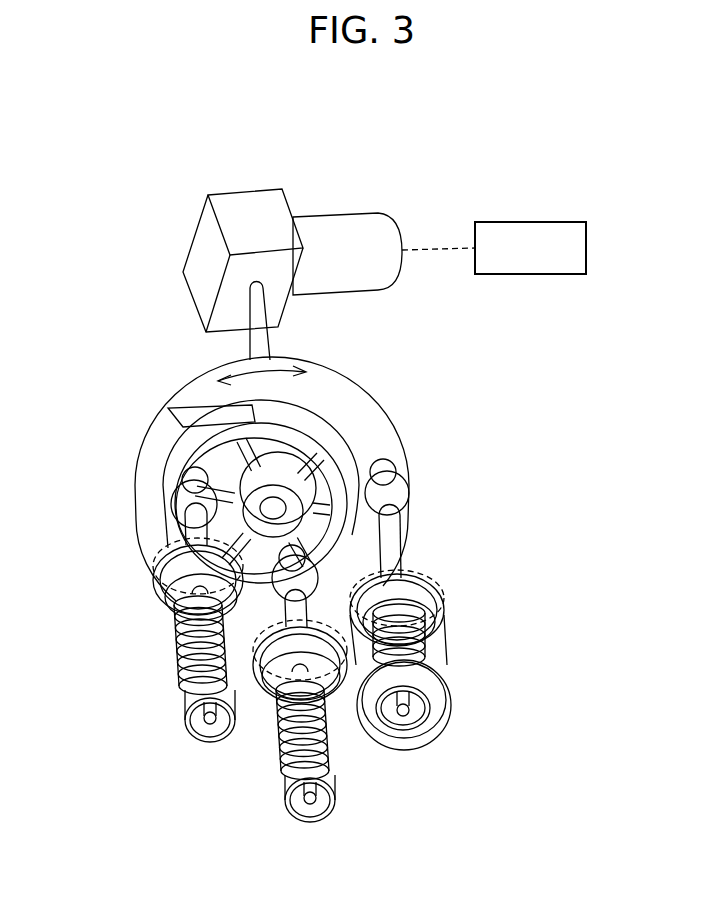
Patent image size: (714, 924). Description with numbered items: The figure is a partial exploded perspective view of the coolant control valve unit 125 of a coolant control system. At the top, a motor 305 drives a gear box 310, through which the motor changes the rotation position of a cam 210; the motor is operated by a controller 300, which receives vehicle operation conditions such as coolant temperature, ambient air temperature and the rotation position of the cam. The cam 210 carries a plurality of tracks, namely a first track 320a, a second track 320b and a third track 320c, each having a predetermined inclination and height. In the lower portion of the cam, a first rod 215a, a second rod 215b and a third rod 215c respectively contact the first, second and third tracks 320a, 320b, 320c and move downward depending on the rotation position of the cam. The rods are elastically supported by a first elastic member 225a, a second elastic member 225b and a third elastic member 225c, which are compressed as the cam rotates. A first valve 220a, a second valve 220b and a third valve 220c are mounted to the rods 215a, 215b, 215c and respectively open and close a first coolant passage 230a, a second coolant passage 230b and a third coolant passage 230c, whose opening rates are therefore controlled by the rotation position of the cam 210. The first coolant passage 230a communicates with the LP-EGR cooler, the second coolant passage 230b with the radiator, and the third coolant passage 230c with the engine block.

The coolant control valve unit 125 is at (142, 300).
The cam 210 is at (178, 386).
The first rod 215a is at (392, 537).
The second rod 215b is at (258, 625).
The third rod 215c is at (190, 590).
The first valve 220a is at (425, 612).
The second valve 220b is at (335, 700).
The third valve 220c is at (176, 612).
The first elastic member 225a is at (420, 642).
The second elastic member 225b is at (340, 772).
The third elastic member 225c is at (182, 668).
The first coolant passage 230a is at (415, 578).
The second coolant passage 230b is at (405, 560).
The third coolant passage 230c is at (160, 550).
The controller 300 is at (530, 222).
The motor 305 is at (341, 230).
The gear box 310 is at (242, 202).
The first track 320a is at (363, 431).
The second track 320b is at (362, 463).
The third track 320c is at (318, 460).